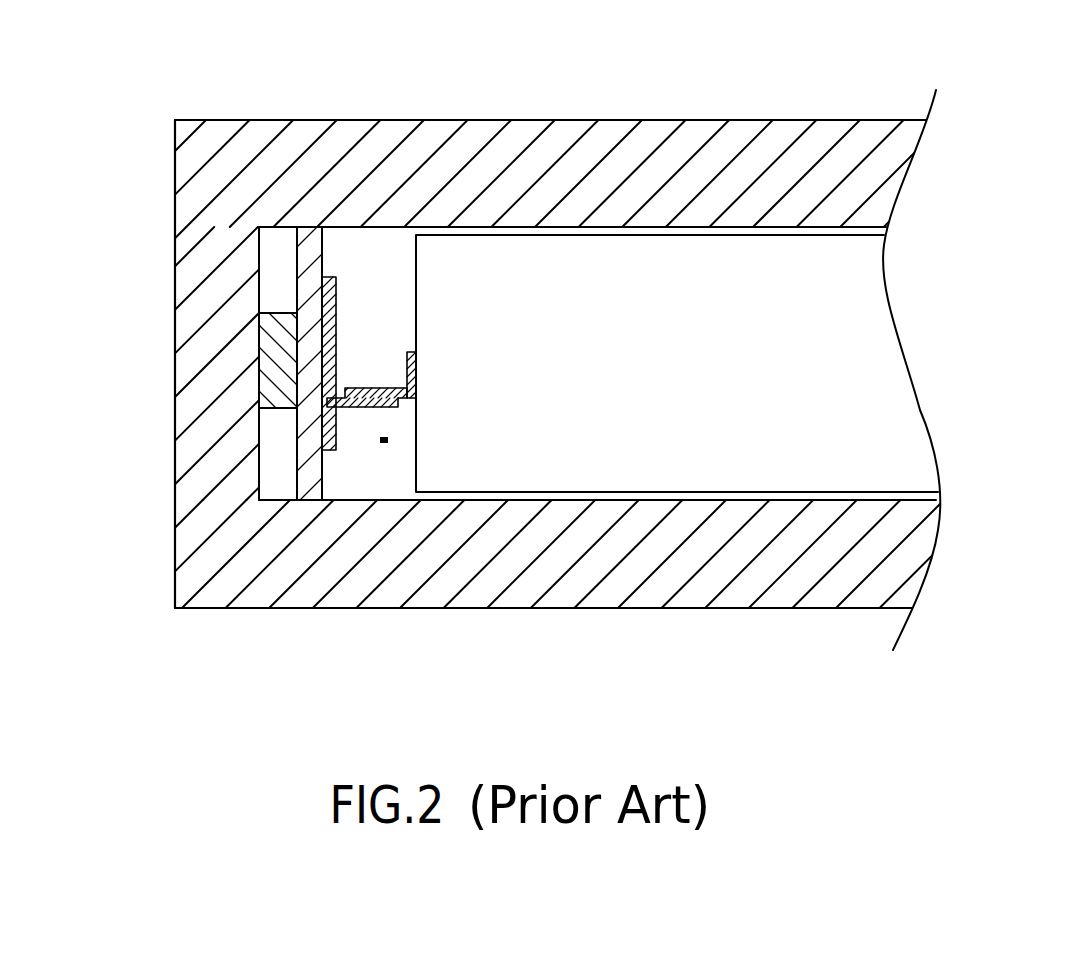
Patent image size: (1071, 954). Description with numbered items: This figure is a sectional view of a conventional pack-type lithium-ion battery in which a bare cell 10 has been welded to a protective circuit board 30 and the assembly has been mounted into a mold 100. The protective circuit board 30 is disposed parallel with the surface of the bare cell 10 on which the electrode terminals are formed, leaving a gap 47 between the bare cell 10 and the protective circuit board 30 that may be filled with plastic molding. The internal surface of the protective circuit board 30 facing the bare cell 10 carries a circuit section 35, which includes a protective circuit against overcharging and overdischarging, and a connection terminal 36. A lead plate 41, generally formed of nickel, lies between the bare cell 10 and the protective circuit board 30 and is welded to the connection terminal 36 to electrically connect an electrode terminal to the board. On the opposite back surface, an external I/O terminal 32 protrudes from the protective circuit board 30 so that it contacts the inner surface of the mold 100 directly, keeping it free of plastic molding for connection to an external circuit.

The mold 100 is at (742, 137).
The bare cell 10 is at (577, 258).
The protective circuit board 30 is at (305, 258).
The external I/O terminal 32 is at (272, 385).
The circuit section 35 is at (333, 301).
The connection terminal 36 is at (370, 408).
The lead plate 41 is at (418, 370).
The gap 47 is at (368, 340).